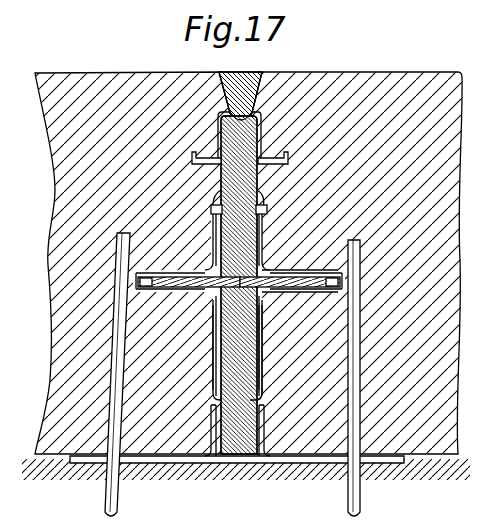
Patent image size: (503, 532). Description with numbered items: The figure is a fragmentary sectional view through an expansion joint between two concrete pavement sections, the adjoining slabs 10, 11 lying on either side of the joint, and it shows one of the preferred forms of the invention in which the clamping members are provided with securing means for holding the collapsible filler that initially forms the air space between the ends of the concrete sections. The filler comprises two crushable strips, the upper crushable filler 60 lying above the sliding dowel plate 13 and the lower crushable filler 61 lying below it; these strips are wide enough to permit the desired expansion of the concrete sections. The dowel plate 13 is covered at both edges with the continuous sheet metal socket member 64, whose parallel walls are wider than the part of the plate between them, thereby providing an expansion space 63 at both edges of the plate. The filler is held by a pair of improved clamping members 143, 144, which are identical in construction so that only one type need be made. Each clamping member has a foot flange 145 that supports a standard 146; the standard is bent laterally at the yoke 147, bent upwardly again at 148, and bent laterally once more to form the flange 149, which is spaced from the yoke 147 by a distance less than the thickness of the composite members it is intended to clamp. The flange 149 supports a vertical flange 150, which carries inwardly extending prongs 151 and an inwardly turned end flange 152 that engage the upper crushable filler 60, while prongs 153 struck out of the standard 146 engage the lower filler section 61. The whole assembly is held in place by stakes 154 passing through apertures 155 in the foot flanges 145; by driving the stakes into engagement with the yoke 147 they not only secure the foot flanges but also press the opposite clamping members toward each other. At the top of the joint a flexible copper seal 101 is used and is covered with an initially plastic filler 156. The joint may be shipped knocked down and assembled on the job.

The concrete slab 10 is at (128, 70).
The adjacent concrete slab 11 is at (416, 75).
The sliding dowel plate 13 is at (277, 280).
The crushable filler strip 60 is at (263, 205).
The crushable filler strip 61 is at (298, 347).
The expansion space 63 is at (148, 270).
The continuous sheet metal socket member 64 is at (184, 270).
The flexible copper seal 101 is at (264, 136).
The clamping member 143 is at (208, 340).
The clamping member 144 is at (266, 364).
The foot flange 145 is at (310, 456).
The standard 146 is at (288, 400).
The yoke 147 is at (312, 305).
The upward bend 148 is at (347, 280).
The flange 149 is at (307, 270).
The vertical flange 150 is at (262, 232).
The inwardly extending prong 151 is at (324, 158).
The inwardly turned end flange 152 is at (213, 182).
The prong 153 is at (220, 382).
The stake 154 is at (117, 400).
The aperture 155 is at (133, 434).
The initially plastic filler 156 is at (245, 84).